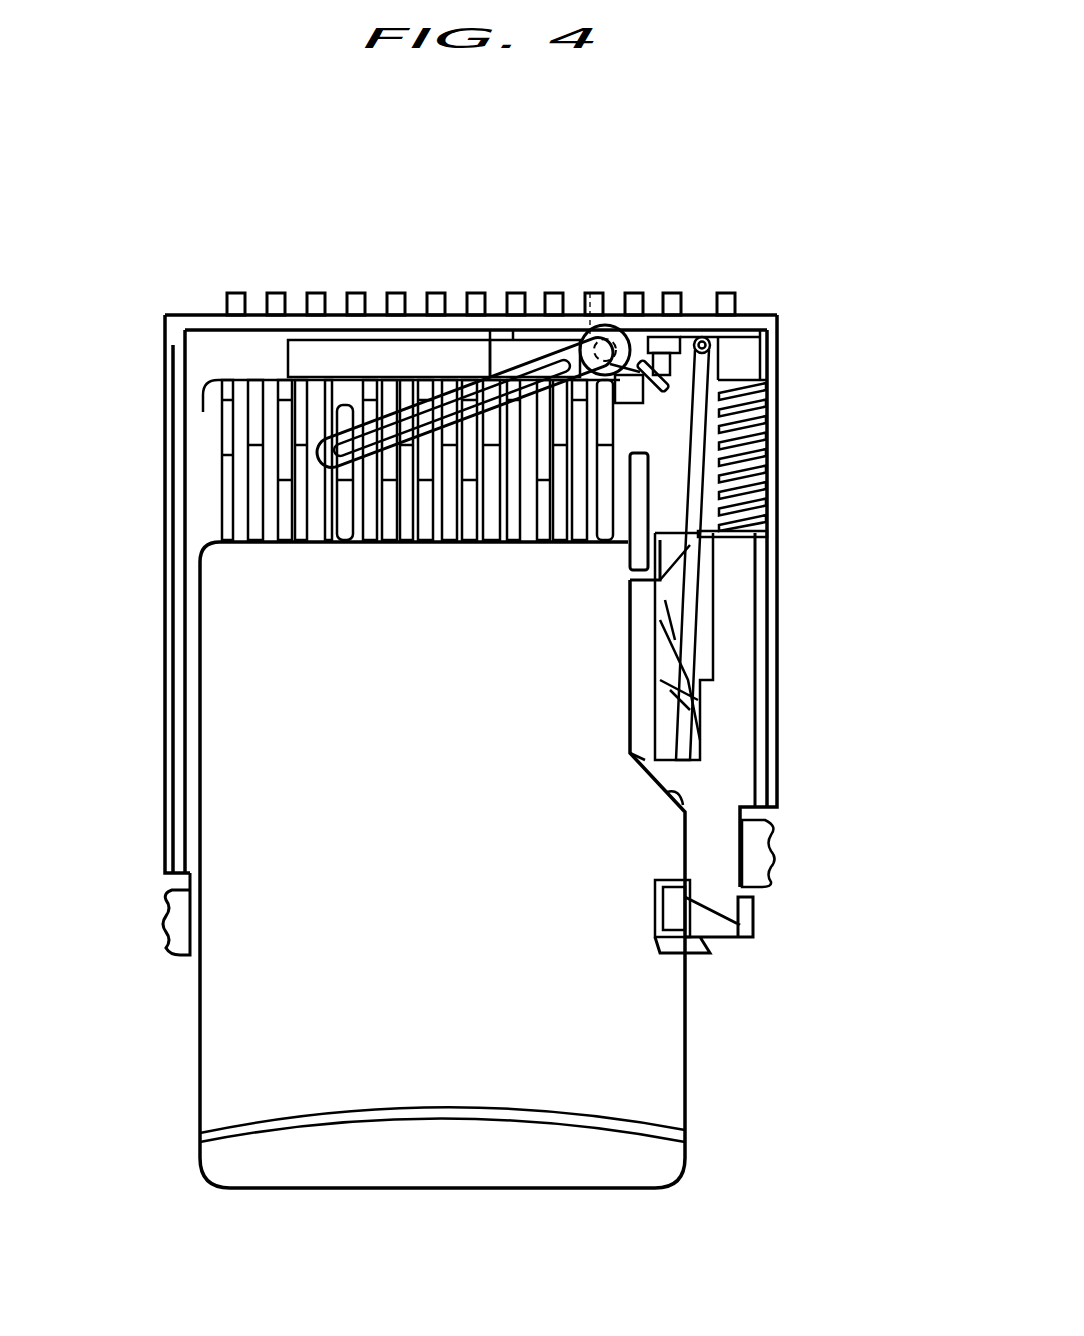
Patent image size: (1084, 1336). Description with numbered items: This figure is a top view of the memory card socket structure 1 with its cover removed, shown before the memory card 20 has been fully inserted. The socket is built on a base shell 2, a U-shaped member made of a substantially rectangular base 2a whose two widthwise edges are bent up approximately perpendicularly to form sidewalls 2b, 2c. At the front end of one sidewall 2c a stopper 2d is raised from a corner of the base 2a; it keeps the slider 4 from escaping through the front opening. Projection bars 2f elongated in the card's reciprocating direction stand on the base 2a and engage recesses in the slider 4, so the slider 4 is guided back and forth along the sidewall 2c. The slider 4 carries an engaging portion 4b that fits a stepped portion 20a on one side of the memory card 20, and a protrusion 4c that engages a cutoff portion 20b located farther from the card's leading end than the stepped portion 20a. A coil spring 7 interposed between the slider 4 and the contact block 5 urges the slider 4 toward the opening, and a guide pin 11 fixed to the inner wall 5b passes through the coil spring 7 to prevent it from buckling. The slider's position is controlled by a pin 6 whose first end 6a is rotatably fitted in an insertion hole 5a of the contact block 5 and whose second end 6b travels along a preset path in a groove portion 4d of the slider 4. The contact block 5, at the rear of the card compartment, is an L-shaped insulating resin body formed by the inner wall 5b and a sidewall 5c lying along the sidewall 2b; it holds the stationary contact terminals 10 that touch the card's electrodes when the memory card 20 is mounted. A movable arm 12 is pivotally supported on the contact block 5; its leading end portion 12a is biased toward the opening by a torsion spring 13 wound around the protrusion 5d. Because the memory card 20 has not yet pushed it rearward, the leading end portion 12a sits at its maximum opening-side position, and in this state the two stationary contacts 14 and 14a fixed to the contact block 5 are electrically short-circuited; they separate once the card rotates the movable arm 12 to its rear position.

The memory card socket structure 1 is at (744, 178).
The base shell 2 is at (158, 718).
The base 2a is at (212, 465).
The sidewall 2b is at (165, 656).
The sidewall 2c is at (778, 690).
The stopper 2d is at (730, 955).
The projection bars 2f is at (632, 522).
The slider 4 is at (758, 751).
The engaging portion 4b is at (665, 775).
The protrusion 4c is at (660, 903).
The groove portion 4d is at (720, 627).
The contact block 5 is at (760, 313).
The insertion hole 5a is at (693, 330).
The inner wall 5b is at (212, 356).
The sidewall 5c is at (190, 578).
The protrusion 5d is at (590, 325).
The pin 6 is at (696, 543).
The first end 6a is at (712, 345).
The second end 6b is at (694, 592).
The coil spring 7 is at (770, 404).
The contact terminals 10 is at (236, 293).
The guide pin 11 is at (768, 500).
The movable arm 12 is at (525, 350).
The leading end portion 12a is at (330, 474).
The torsion spring 13 is at (660, 388).
The stationary contact 14 is at (670, 293).
The stationary contact 14a is at (632, 293).
The memory card 20 is at (569, 1194).
The stepped portion 20a is at (672, 800).
The cutoff portion 20b is at (750, 925).